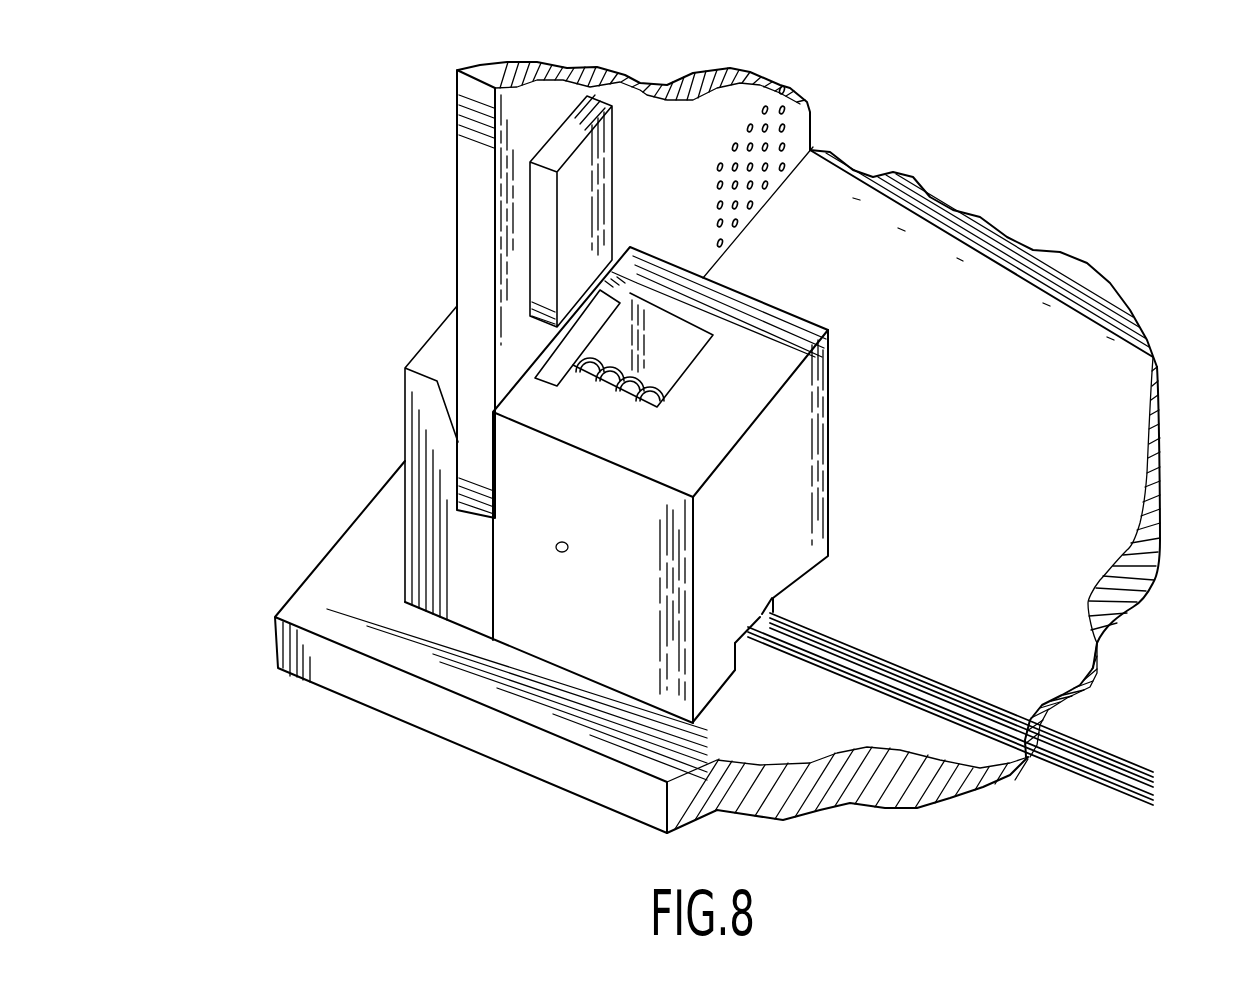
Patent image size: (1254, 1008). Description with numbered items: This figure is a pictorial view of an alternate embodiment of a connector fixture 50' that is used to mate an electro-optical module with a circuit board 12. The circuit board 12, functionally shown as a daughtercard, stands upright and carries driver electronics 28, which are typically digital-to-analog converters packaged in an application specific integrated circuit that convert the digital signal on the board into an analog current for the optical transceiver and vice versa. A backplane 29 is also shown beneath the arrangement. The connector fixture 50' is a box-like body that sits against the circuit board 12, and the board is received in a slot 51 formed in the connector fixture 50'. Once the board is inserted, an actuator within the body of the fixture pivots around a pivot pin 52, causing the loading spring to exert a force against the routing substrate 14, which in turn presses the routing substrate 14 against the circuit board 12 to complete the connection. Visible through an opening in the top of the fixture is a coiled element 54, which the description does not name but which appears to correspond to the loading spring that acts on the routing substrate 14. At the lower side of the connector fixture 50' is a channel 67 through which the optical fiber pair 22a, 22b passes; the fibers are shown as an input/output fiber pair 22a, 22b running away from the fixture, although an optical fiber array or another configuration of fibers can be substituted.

The circuit board 12 is at (468, 227).
The routing substrate 14 is at (563, 350).
The driver electronics 28 is at (548, 140).
The backplane 29 is at (313, 600).
The connector fixture 50' is at (556, 485).
The slot 51 is at (450, 390).
The pivot pin 52 is at (555, 546).
The coil spring 54 is at (582, 360).
The channel 67 is at (735, 645).
The optical fiber 22a is at (1153, 795).
The optical fiber 22b is at (1153, 765).